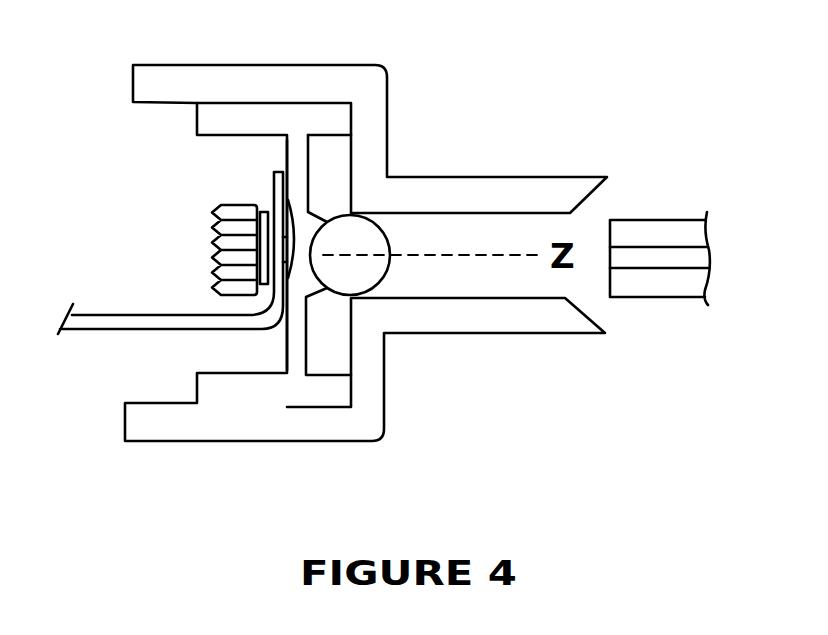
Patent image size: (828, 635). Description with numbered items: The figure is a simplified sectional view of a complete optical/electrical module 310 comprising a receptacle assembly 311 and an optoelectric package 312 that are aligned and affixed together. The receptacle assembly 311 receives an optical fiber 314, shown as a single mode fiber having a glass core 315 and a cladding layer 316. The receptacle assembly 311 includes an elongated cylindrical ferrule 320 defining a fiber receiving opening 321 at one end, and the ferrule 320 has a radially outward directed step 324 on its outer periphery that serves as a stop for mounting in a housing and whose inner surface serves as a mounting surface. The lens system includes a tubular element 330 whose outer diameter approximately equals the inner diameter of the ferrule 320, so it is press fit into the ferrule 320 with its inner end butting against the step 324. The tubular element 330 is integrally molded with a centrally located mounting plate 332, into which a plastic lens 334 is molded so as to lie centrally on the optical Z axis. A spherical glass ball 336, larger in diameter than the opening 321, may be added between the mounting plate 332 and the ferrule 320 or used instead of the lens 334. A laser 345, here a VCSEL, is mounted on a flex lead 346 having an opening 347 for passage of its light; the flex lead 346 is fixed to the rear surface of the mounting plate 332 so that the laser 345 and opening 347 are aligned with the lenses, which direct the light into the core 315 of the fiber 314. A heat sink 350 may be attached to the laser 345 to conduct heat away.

The optical/electrical module 310 is at (522, 89).
The receptacle assembly 311 is at (116, 163).
The optoelectric package 312 is at (524, 154).
The optical fiber 314 is at (731, 272).
The glass core 315 is at (623, 256).
The cladding layer 316 is at (647, 282).
The ferrule 320 is at (307, 82).
The fiber receiving opening 321 is at (563, 288).
The step 324 is at (372, 134).
The tubular element 330 is at (285, 390).
The mounting plate 332 is at (293, 150).
The plastic lens 334 is at (322, 268).
The ball 336 is at (363, 241).
The laser 345 is at (272, 268).
The flex lead 346 is at (132, 318).
The opening 347 is at (284, 203).
The heat sink 350 is at (240, 243).